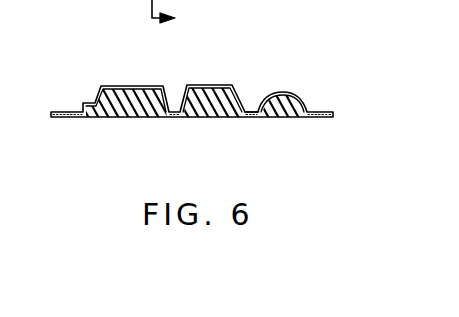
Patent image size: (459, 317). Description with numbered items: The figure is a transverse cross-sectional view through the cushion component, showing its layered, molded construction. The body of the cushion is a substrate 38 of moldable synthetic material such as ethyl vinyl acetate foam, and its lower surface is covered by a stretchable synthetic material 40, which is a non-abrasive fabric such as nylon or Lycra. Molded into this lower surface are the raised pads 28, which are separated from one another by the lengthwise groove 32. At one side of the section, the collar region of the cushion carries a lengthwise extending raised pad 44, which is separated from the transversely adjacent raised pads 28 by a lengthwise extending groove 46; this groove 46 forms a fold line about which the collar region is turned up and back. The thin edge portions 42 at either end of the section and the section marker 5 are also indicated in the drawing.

The section line for FIG. 5 is at (154, 11).
The raised pads 28 is at (118, 88).
The lengthwise groove 32 is at (176, 100).
The substrate 38 is at (213, 104).
The stretchable synthetic material 40 is at (228, 86).
The flange edge portion 42 is at (68, 108).
The lengthwise extending raised pad 44 is at (296, 96).
The lengthwise extending groove 46 is at (253, 106).